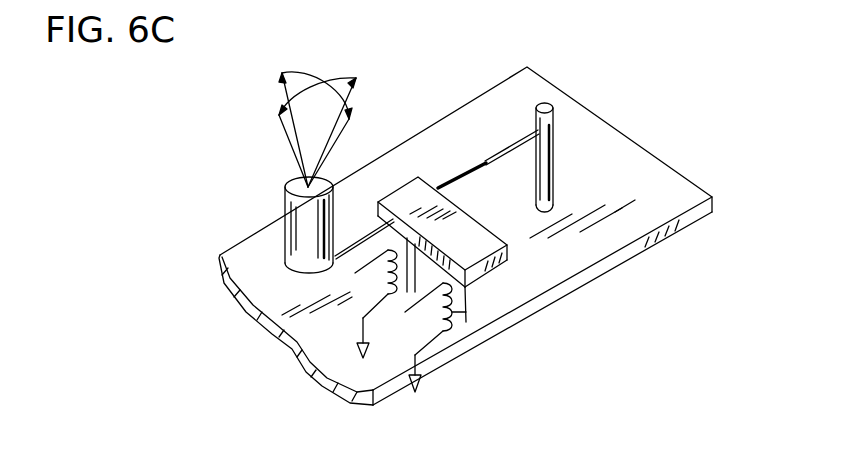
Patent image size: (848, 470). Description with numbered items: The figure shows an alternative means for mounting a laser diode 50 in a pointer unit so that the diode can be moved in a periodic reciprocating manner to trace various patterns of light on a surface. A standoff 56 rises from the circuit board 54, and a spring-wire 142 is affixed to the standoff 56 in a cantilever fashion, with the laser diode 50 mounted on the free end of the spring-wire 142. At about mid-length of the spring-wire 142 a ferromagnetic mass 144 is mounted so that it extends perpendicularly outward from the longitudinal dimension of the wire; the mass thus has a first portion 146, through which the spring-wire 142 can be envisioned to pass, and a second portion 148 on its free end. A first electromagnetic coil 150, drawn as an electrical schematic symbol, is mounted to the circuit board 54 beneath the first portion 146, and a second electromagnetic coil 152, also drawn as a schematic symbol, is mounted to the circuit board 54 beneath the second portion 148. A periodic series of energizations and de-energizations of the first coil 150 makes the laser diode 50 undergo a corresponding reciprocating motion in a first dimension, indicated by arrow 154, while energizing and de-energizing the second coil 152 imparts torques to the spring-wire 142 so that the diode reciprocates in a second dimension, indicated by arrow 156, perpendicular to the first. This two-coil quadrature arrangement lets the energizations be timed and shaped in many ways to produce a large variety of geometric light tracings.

The laser diode 50 is at (284, 200).
The circuit board 54 is at (653, 182).
The standoff 56 is at (554, 160).
The spring-wire 142 is at (493, 148).
The ferromagnetic mass 144 is at (494, 282).
The first portion 146 is at (411, 190).
The second portion 148 is at (480, 250).
The first electromagnetic coil 150 is at (418, 263).
The second electromagnetic coil 152 is at (443, 303).
The arrow 154 is at (332, 77).
The arrow 156 is at (300, 72).